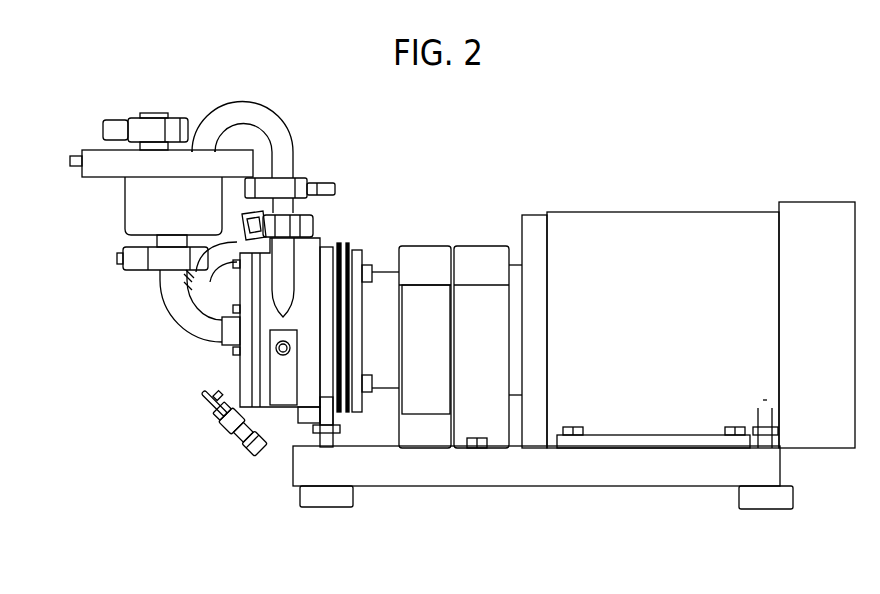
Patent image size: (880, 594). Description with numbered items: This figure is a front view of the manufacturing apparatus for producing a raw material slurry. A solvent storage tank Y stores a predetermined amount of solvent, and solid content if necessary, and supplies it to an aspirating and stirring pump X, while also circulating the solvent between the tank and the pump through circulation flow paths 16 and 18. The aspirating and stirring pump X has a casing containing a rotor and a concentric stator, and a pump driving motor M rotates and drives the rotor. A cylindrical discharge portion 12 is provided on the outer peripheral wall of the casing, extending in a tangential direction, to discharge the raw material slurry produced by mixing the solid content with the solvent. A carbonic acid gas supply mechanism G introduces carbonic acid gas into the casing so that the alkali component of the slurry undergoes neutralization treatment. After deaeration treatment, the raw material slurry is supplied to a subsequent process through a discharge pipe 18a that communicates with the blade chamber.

The cylindrical discharge portion 12 is at (282, 290).
The circulation flow path 16 is at (170, 302).
The circulation flow path 18 is at (277, 137).
The discharge pipe 18a is at (230, 430).
The carbonic acid gas supply mechanism G is at (249, 226).
The pump driving motor M is at (665, 230).
The aspirating and stirring pump X is at (265, 353).
The solvent storage tank Y is at (132, 205).